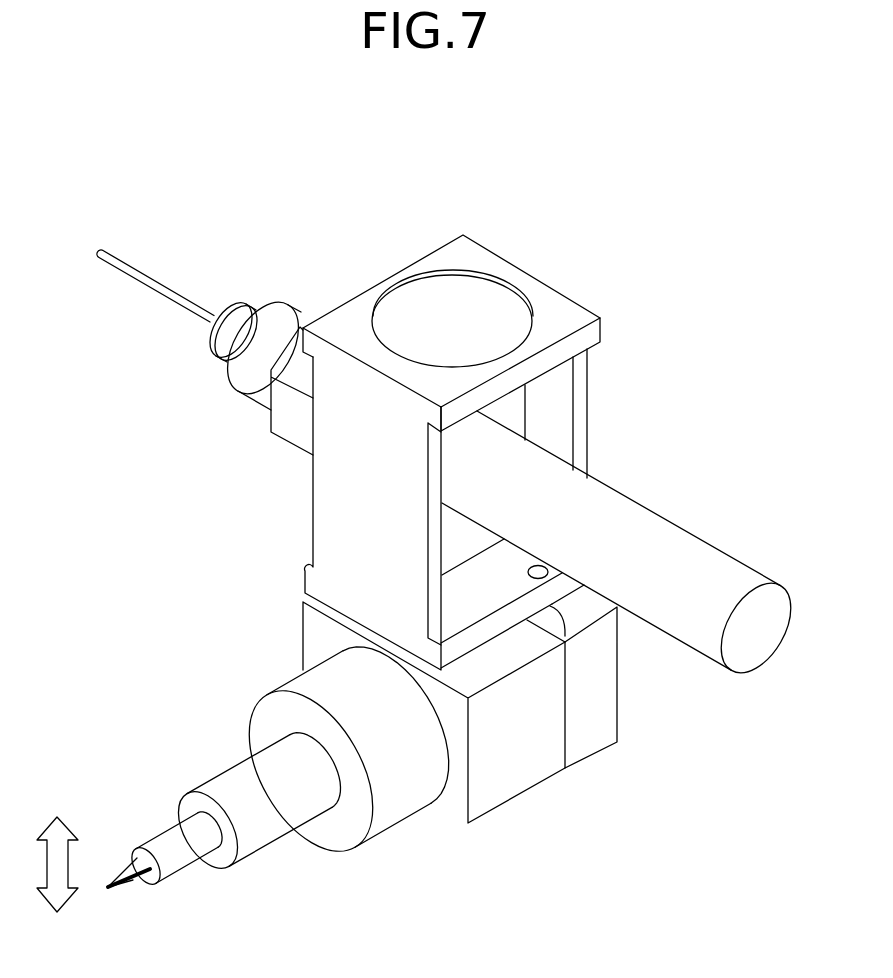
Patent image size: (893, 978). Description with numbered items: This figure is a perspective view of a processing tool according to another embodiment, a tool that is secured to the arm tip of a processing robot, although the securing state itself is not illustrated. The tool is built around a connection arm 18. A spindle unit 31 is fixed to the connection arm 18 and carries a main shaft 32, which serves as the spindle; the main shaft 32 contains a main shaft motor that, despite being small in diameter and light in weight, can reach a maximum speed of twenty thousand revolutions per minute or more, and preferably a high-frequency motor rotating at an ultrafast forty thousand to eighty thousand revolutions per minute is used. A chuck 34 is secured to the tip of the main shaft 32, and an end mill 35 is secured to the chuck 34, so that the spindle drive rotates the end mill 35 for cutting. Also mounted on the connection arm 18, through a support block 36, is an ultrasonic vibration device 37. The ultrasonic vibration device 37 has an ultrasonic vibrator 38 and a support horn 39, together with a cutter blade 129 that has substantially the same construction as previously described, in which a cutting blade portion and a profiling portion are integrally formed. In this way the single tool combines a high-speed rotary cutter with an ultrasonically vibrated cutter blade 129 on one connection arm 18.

The connection arm 18 is at (323, 507).
The spindle unit 31 is at (683, 542).
The main shaft 32 is at (293, 317).
The chuck 34 is at (245, 302).
The end mill 35 is at (162, 280).
The support block 36 is at (607, 692).
The ultrasonic vibration device 37 is at (528, 777).
The ultrasonic vibrator 38 is at (252, 832).
The support horn 39 is at (177, 860).
The cutter blade 129 is at (133, 878).